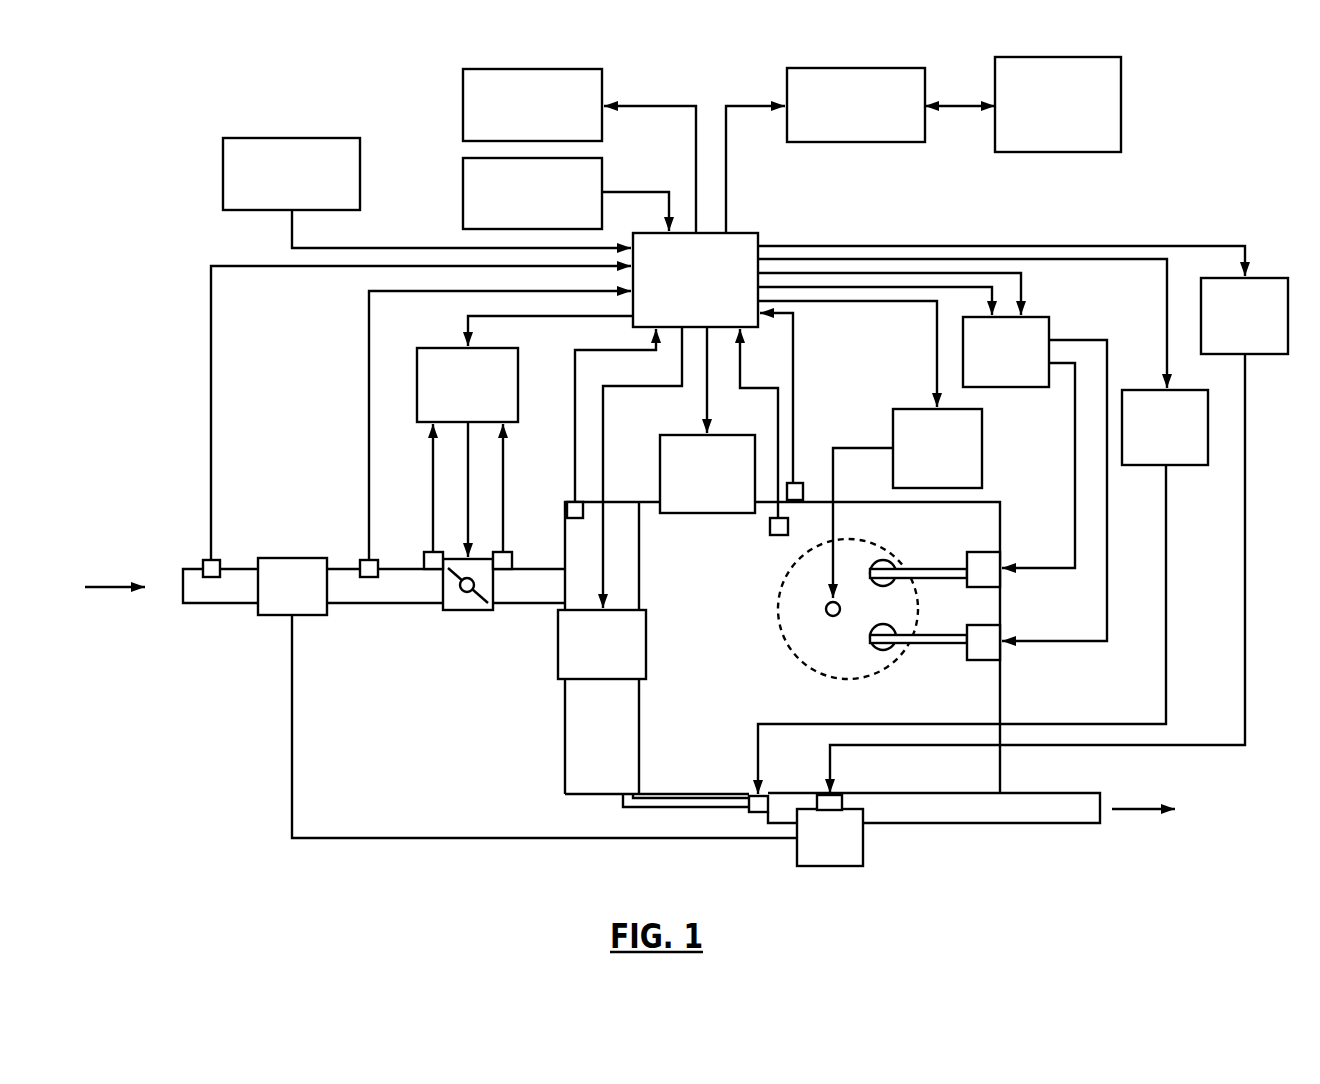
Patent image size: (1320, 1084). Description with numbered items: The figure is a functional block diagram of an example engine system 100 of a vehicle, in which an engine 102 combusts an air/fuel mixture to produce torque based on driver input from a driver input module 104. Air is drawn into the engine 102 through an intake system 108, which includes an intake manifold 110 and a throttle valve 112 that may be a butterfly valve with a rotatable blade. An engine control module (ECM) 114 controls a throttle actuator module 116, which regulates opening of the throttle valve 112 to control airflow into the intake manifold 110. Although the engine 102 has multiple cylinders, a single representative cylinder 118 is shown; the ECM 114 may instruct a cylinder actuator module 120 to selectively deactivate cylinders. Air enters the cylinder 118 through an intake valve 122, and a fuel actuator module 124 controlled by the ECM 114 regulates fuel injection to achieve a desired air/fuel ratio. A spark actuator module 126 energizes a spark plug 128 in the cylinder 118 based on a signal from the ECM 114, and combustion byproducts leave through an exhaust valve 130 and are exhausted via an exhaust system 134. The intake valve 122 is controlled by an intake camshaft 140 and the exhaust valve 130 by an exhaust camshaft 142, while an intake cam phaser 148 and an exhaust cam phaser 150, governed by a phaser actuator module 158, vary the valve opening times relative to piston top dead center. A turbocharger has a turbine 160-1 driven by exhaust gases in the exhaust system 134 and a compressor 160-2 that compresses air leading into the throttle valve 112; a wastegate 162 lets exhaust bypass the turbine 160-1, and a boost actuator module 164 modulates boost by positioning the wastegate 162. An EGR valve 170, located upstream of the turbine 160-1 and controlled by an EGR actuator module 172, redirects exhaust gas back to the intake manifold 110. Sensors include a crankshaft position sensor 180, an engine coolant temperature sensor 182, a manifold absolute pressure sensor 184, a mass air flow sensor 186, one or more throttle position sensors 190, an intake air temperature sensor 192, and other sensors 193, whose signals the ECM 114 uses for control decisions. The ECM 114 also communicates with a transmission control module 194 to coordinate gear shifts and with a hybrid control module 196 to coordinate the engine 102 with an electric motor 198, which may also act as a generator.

The engine system 100 is at (158, 128).
The engine 102 is at (1000, 506).
The driver input module 104 is at (463, 193).
The intake system 108 is at (178, 638).
The intake manifold 110 is at (565, 722).
The throttle valve 112 is at (468, 610).
The engine control module 114 is at (758, 243).
The throttle actuator module 116 is at (443, 348).
The cylinder 118 is at (812, 672).
The cylinder actuator module 120 is at (725, 435).
The intake valve 122 is at (884, 560).
The fuel actuator module 124 is at (619, 679).
The spark actuator module 126 is at (982, 448).
The spark plug 128 is at (826, 611).
The exhaust valve 130 is at (888, 650).
The exhaust system 134 is at (1070, 826).
The intake camshaft 140 is at (940, 569).
The exhaust camshaft 142 is at (945, 646).
The intake cam phaser 148 is at (986, 552).
The exhaust cam phaser 150 is at (985, 660).
The phaser actuator module 158 is at (1049, 328).
The turbine 160-1 is at (863, 840).
The compressor 160-2 is at (292, 615).
The wastegate 162 is at (842, 795).
The boost actuator module 164 is at (1265, 354).
The exhaust gas recirculation valve 170 is at (755, 812).
The EGR actuator module 172 is at (1185, 465).
The crankshaft position sensor 180 is at (795, 483).
The engine coolant temperature sensor 182 is at (778, 535).
The manifold absolute pressure sensor 184 is at (575, 502).
The mass air flow sensor 186 is at (369, 560).
The throttle position sensors 190 is at (432, 569).
The intake air temperature sensor 192 is at (205, 562).
The other sensors 193 is at (294, 138).
The transmission control module 194 is at (463, 105).
The hybrid control module 196 is at (855, 142).
The electric motor 198 is at (1070, 152).